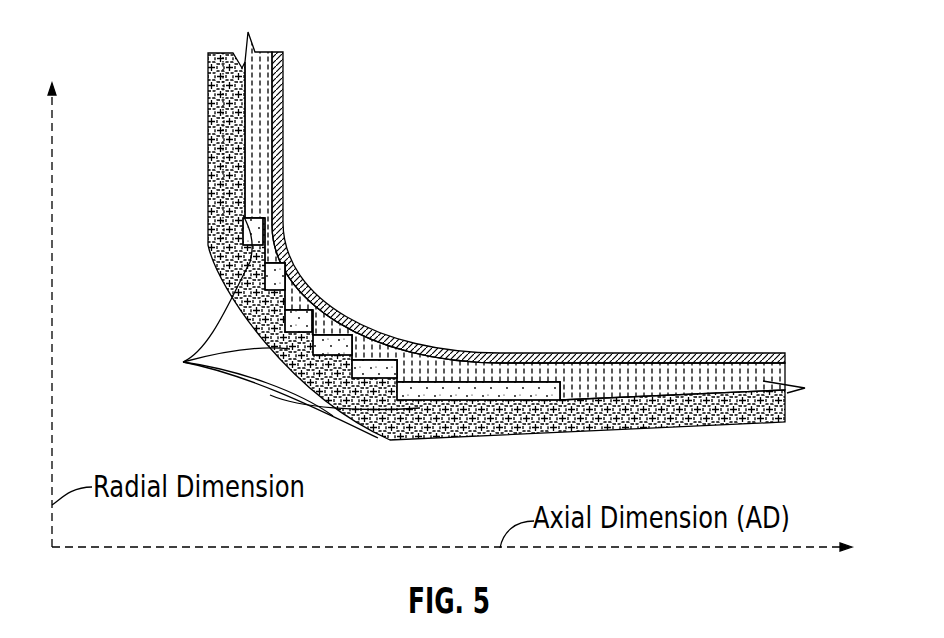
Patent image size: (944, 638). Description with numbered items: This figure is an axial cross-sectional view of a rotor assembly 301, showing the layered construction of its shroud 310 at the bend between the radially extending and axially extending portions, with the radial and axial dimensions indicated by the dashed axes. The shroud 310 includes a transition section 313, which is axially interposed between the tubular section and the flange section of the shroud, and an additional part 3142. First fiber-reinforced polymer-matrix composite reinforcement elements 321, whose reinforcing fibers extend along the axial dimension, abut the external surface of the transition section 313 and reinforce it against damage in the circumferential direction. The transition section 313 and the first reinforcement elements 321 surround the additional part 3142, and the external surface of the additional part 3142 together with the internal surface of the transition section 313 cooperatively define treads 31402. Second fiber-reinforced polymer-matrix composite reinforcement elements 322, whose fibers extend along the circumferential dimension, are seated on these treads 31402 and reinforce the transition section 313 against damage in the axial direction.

The rotor assembly 301 is at (452, 226).
The shroud 310 is at (226, 218).
The transition section 313 is at (262, 147).
The first fiber-reinforced polymer-matrix composite reinforcement elements 321 is at (282, 107).
The second fiber-reinforced polymer-matrix composite reinforcement elements 322 is at (276, 228).
The additional part 3142 is at (212, 155).
The treads 31402 is at (260, 326).